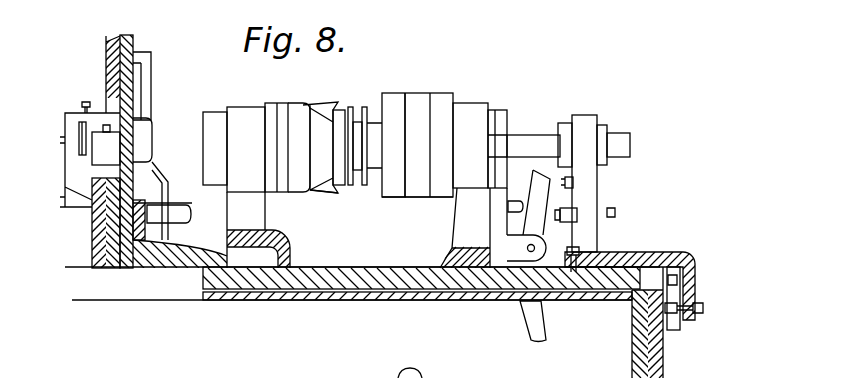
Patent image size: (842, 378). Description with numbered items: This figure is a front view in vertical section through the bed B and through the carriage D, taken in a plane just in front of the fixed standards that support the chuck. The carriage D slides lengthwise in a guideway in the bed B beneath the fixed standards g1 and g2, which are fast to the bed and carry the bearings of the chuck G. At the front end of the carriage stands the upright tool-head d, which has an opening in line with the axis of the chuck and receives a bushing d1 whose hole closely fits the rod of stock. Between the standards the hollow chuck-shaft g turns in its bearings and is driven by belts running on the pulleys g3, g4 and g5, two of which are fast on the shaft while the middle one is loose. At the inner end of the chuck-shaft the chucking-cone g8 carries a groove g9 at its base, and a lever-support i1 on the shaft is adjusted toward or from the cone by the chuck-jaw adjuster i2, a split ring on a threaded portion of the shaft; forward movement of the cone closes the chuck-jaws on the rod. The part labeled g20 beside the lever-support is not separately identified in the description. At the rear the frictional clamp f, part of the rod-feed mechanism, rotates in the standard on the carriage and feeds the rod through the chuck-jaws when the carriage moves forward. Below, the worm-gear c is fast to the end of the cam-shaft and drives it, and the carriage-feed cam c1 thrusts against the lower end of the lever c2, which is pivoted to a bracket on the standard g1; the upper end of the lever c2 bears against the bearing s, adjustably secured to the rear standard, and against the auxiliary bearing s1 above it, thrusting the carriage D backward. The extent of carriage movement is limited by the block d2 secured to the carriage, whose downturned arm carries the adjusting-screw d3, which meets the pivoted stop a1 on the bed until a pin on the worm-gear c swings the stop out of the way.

The bed B is at (349, 288).
The carriage D is at (331, 292).
The tool-head d is at (103, 152).
The bushing d1 is at (152, 138).
The block d2 is at (673, 253).
The adjusting-screw d3 is at (703, 308).
The pivoted stop a1 is at (667, 332).
The standard g1 is at (244, 110).
The chuck-jaw adjuster i2 is at (270, 106).
The lever-support i1 is at (300, 105).
The chuck G is at (324, 131).
The cone flange g20 is at (321, 187).
The chucking-cone g8 is at (350, 107).
The groove g9 is at (358, 186).
The chuck-shaft g is at (382, 94).
The pulley g3 is at (395, 190).
The pulley g4 is at (421, 190).
The pulley g5 is at (447, 190).
The standard g2 is at (471, 103).
The frictional clamp f is at (523, 138).
The worm-gear c is at (586, 115).
The auxiliary bearing s1 is at (573, 182).
The bearing s is at (561, 209).
The carriage-feed cam c1 is at (508, 206).
The lever c2 is at (533, 171).